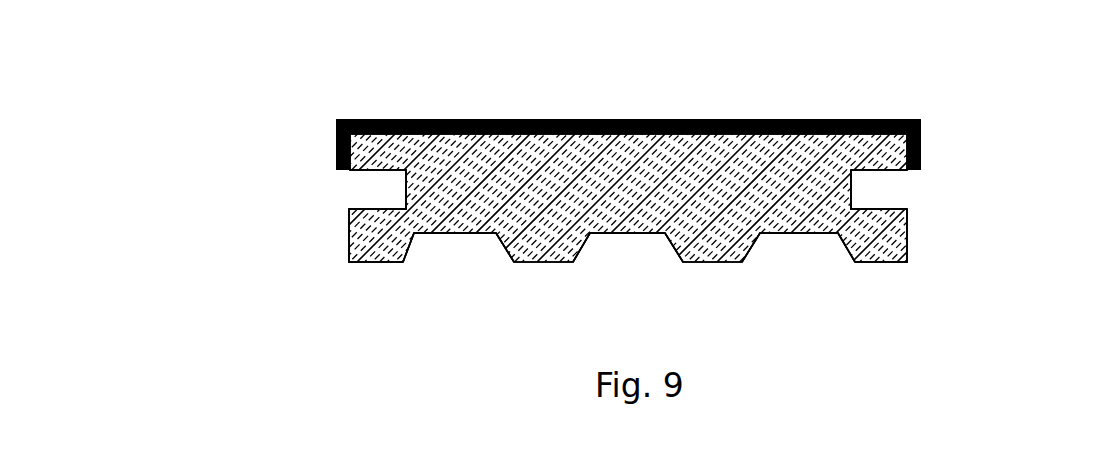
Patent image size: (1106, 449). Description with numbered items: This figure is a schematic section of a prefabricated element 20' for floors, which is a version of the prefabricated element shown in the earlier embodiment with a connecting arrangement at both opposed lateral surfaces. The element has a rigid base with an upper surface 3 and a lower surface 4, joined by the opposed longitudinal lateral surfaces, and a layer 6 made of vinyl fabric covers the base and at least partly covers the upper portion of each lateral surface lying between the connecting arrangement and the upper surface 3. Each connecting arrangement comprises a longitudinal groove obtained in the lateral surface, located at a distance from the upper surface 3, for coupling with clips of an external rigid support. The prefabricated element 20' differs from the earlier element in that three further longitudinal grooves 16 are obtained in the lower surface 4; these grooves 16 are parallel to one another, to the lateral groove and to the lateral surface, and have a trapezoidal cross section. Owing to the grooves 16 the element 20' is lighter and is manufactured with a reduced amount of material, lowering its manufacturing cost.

The prefabricated element 20' is at (563, 134).
The upper surface 3 is at (781, 120).
The layer 6 is at (520, 120).
The lower surface 4 is at (375, 262).
The longitudinal grooves 16 is at (453, 240).